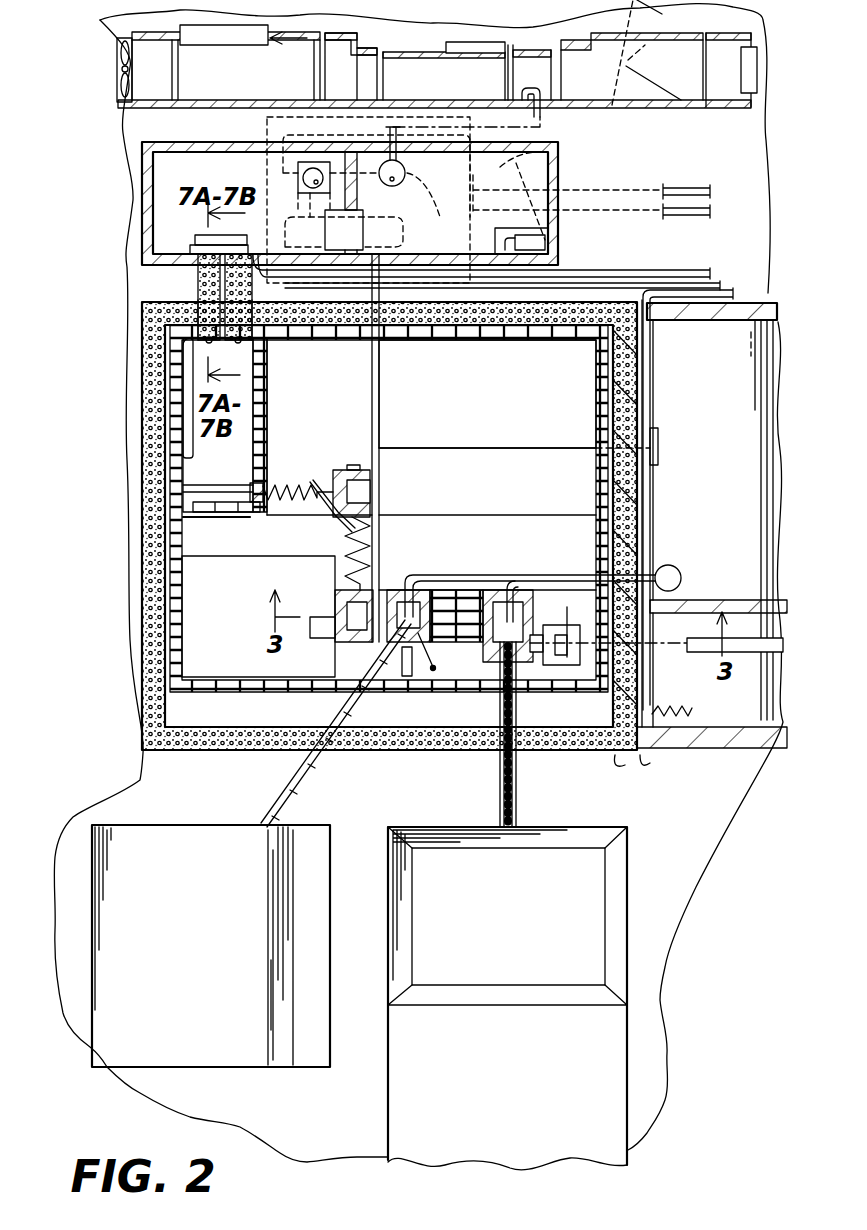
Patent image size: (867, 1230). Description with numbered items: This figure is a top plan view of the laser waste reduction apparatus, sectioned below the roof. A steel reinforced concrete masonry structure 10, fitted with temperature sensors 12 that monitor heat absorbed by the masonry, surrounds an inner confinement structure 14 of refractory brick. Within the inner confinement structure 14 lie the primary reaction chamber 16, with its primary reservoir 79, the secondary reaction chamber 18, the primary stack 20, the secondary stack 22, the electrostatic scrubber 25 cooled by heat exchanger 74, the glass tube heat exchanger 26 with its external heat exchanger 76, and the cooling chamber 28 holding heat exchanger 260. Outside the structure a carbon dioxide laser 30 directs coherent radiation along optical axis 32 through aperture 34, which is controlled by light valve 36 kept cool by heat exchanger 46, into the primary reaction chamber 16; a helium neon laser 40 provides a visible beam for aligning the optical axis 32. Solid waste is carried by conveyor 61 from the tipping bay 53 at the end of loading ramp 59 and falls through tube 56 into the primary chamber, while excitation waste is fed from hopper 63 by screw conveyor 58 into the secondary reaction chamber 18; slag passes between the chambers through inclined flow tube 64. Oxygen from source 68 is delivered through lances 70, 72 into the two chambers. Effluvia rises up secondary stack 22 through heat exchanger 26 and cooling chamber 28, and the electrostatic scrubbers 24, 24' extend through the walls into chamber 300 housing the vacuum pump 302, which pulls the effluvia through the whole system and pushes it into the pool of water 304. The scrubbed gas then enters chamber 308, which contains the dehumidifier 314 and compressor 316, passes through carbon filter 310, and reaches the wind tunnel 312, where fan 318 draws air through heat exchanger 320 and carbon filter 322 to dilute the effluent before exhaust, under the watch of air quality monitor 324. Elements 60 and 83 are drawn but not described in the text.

The masonry structure 10 is at (143, 583).
The temperature sensors 12 is at (607, 748).
The inner confinement structure 14 is at (592, 382).
The primary reaction chamber 16 is at (502, 592).
The secondary reaction chamber 18 is at (395, 588).
The primary stack 20 is at (347, 604).
The secondary stack 22 is at (342, 465).
The electrostatic scrubber 24 is at (160, 298).
The electrostatic scrubber 24' is at (158, 313).
The electrostatic scrubber 25 is at (347, 533).
The heat exchanger 26 is at (278, 482).
The cooling chamber 28 is at (262, 385).
The carbon dioxide laser 30 is at (770, 645).
The optical axis 32 is at (693, 636).
The aperture 34 is at (627, 657).
The light valve 36 is at (657, 632).
The helium neon laser 40 is at (183, 630).
The heat exchanger 46 is at (672, 735).
The tipping bay 53 is at (603, 888).
The tube 56 is at (497, 637).
The screw conveyor 58 is at (310, 762).
The loading ramp 59 is at (492, 1077).
The lever 60 is at (425, 668).
The conveyor 61 is at (500, 770).
The hopper 63 is at (331, 931).
The inclined flow tube 64 is at (453, 588).
The oxygen source 68 is at (680, 566).
The lance 70 is at (517, 618).
The lance 72 is at (410, 587).
The heat exchanger 74 is at (373, 532).
The external heat exchanger 76 is at (292, 512).
The primary reservoir 79 is at (517, 588).
The rod 83 is at (400, 668).
The heat exchanger 260 is at (192, 458).
The chamber 300 is at (198, 164).
The vacuum pump 302 is at (298, 180).
The pool of water 304 is at (350, 283).
The chamber 308 is at (503, 165).
The carbon filter 310 is at (363, 228).
The wind tunnel 312 is at (258, 87).
The dehumidifier 314 is at (370, 208).
The compressor 316 is at (548, 240).
The fan 318 is at (118, 62).
The heat exchanger 320 is at (746, 78).
The carbon filter 322 is at (505, 62).
The air quality monitor 324 is at (247, 40).